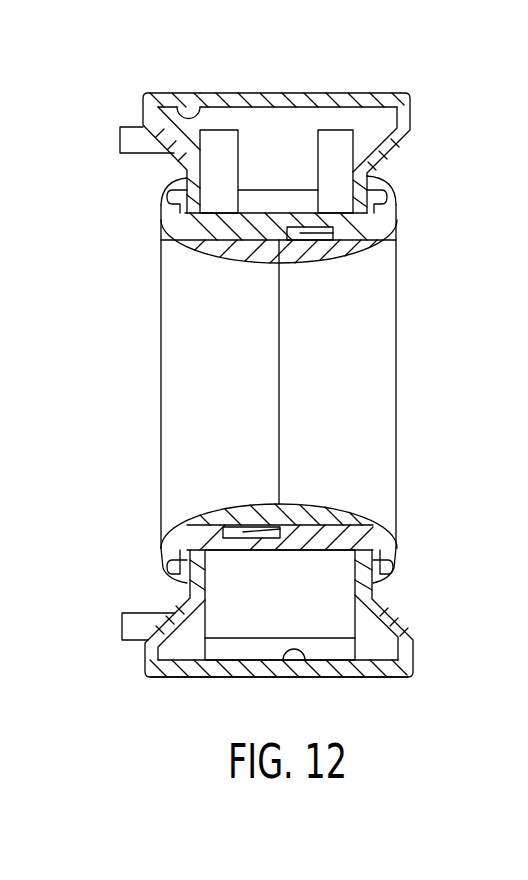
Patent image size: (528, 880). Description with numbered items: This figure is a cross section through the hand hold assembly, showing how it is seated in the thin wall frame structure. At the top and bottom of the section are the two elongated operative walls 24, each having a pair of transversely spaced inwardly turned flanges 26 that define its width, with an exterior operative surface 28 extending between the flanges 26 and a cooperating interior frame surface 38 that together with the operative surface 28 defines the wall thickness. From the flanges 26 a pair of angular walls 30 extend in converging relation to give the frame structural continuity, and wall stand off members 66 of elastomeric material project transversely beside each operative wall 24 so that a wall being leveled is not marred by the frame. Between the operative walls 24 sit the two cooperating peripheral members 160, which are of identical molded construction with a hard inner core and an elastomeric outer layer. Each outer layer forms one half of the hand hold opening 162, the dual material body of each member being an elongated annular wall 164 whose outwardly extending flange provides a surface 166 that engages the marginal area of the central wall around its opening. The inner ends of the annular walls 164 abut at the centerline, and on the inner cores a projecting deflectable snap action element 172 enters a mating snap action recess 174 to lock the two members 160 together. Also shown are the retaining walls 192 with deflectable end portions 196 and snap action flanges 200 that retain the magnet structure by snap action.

The operative wall 24 is at (227, 99).
The inwardly turned flange 26 is at (150, 110).
The exterior operative surface 28 is at (295, 93).
The angular wall 30 is at (405, 135).
The interior frame surface 38 is at (188, 110).
The wall stand off member 66 is at (133, 145).
The cooperating peripheral member 160 is at (200, 500).
The hand hold opening 162 is at (347, 261).
The elongated annular wall 164 is at (222, 252).
The peripheral flange surface 166 is at (180, 583).
The deflectable snap action element 172 is at (322, 218).
The snap action recess 174 is at (317, 222).
The retaining wall 192 is at (333, 593).
The deflectable end portion 196 is at (337, 140).
The snap action flange 200 is at (345, 647).